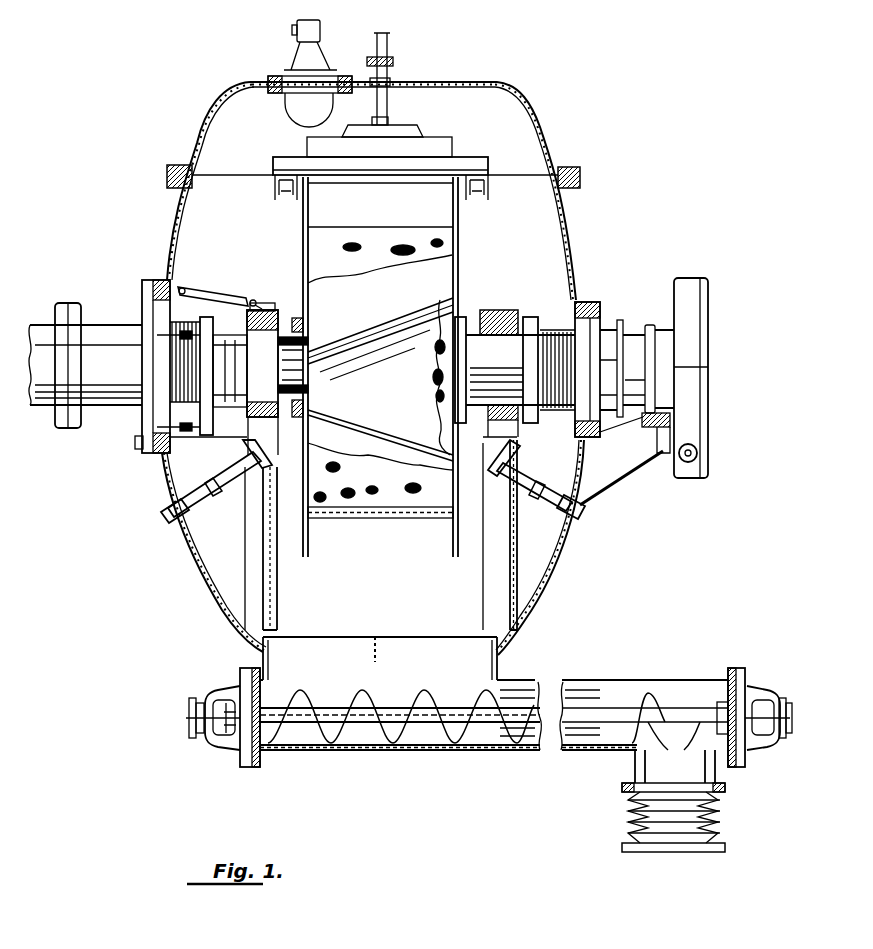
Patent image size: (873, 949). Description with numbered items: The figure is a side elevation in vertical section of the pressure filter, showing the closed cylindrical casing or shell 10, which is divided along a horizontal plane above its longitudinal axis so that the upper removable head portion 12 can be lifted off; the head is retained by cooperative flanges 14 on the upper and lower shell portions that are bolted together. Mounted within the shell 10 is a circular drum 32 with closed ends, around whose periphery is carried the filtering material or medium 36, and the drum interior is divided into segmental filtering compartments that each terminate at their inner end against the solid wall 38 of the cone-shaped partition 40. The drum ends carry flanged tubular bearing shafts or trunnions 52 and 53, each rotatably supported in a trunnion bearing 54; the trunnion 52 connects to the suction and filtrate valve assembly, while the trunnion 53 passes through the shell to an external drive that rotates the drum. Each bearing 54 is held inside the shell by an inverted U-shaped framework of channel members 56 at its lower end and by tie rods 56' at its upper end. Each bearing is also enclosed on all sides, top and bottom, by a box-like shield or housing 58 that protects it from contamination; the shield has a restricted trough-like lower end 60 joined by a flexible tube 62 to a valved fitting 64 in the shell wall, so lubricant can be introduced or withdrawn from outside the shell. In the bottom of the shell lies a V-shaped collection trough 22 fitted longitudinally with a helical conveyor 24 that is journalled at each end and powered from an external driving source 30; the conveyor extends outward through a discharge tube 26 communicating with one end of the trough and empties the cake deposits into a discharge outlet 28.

The casing or shell 10 is at (580, 238).
The upper removable head portion 12 is at (546, 125).
The cooperative flanges 14 is at (581, 180).
The V-shaped collection trough 22 is at (428, 748).
The helical conveyor 24 is at (378, 740).
The discharge tube 26 is at (570, 750).
The discharge outlet 28 is at (717, 816).
The external driving source 30 is at (185, 738).
The circular drum 32 is at (455, 274).
The filtering material or medium 36 is at (386, 517).
The solid wall of cone-shaped partition 38 is at (364, 328).
The cone-shaped partition 40 is at (395, 408).
The tubular bearing shaft or trunnion 52 is at (276, 300).
The tubular bearing shaft or trunnion 53 is at (524, 326).
The trunnion bearing 54 is at (250, 300).
The channel members 56 is at (390, 535).
The tie rods 56' is at (198, 344).
The box-like shield or housing 58 is at (505, 447).
The trough-like lower end 60 is at (266, 470).
The flexible tube 62 is at (233, 472).
The valved fitting 64 is at (165, 511).